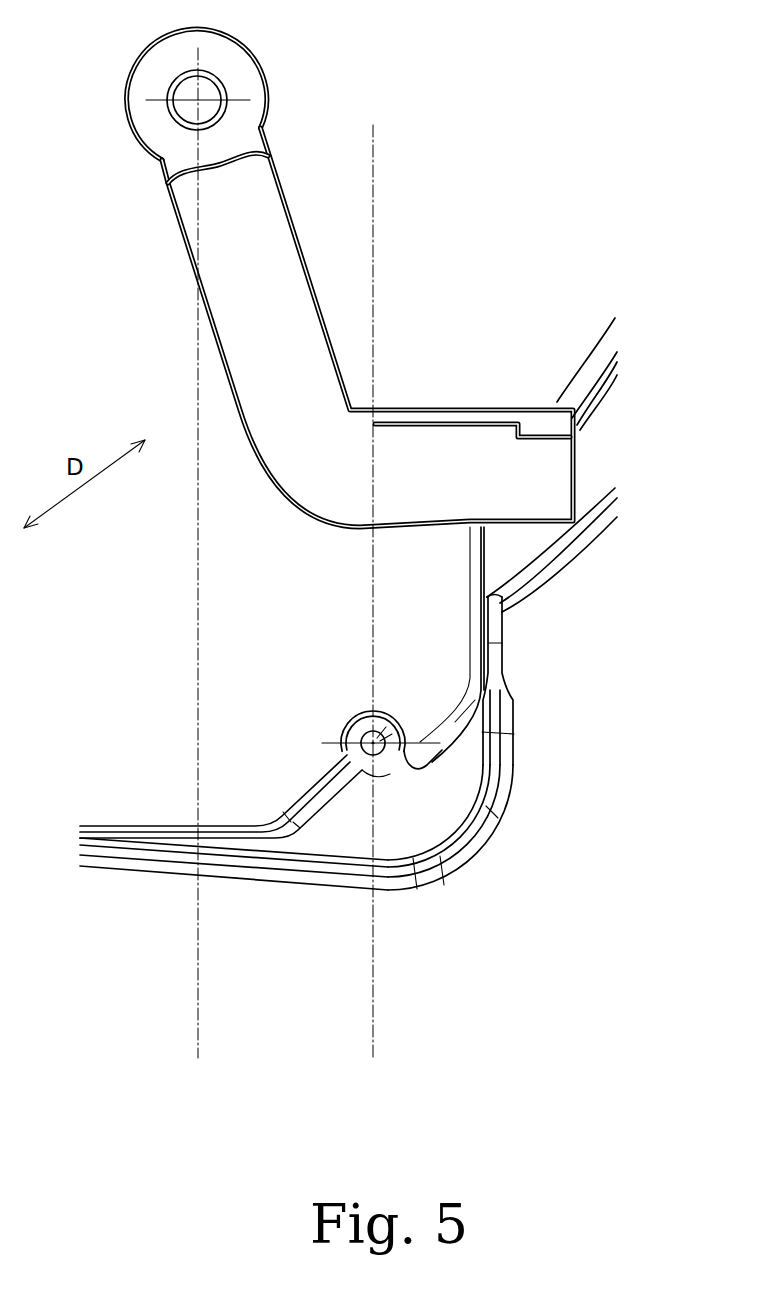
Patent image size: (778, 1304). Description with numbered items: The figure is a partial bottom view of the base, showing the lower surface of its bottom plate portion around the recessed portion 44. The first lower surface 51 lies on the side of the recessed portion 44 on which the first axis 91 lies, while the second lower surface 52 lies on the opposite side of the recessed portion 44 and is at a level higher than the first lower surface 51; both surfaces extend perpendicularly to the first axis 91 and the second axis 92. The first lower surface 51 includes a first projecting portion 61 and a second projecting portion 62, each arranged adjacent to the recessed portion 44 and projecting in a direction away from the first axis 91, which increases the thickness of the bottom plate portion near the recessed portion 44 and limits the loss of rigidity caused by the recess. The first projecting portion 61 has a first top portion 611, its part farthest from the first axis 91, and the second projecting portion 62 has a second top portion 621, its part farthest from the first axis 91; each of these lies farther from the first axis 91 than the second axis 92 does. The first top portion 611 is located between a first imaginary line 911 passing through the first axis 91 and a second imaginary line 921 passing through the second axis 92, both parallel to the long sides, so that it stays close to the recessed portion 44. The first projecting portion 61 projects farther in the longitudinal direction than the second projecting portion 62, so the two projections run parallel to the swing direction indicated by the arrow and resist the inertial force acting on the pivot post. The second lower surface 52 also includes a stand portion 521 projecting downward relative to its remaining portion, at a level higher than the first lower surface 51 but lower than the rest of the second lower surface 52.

The recessed portion 44 is at (355, 727).
The first lower surface 51 is at (275, 592).
The second lower surface 52 is at (396, 736).
The stand portion 521 is at (438, 868).
The first projecting portion 61 is at (221, 863).
The first top portion 611 is at (282, 822).
The second projecting portion 62 is at (489, 687).
The second top portion 621 is at (427, 762).
The first axis 91 is at (203, 93).
The first imaginary line 911 is at (198, 1005).
The second axis 92 is at (396, 718).
The second imaginary line 921 is at (375, 1005).